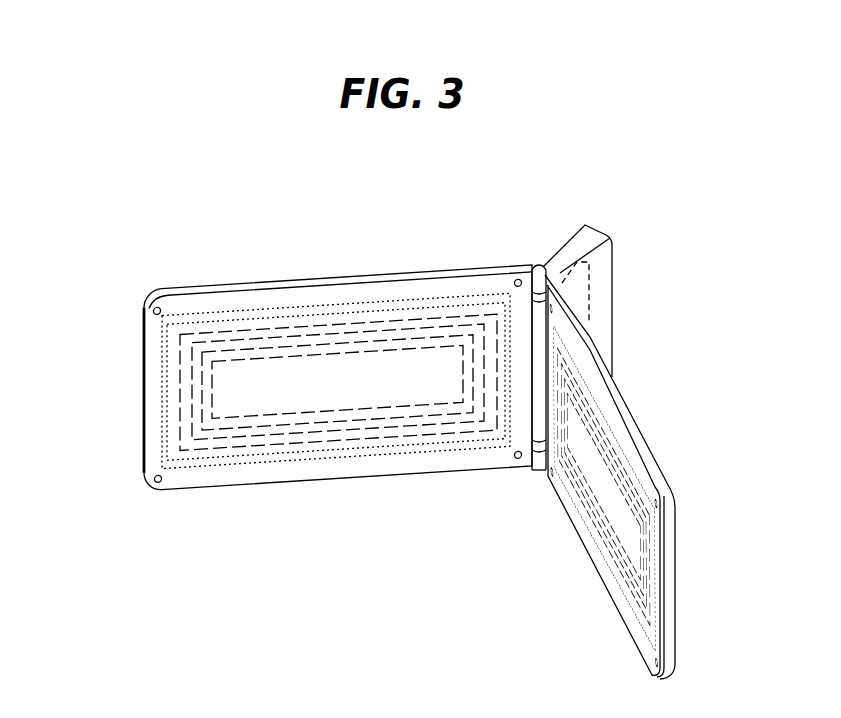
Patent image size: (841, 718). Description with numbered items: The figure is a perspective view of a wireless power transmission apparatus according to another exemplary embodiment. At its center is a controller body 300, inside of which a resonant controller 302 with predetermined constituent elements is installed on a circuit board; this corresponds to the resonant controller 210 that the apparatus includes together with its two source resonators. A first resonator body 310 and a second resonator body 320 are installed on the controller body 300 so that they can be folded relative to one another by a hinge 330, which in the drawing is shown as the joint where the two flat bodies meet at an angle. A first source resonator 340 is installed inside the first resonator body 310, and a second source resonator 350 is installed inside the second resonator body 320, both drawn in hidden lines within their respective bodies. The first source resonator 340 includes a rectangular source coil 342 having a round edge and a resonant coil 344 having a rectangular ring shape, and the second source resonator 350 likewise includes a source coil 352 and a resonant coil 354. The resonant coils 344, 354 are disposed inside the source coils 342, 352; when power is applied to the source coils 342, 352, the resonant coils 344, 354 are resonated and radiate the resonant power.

The controller body 300 is at (565, 238).
The resonant controller 302 is at (594, 316).
The first resonator body 310 is at (144, 480).
The second resonator body 320 is at (598, 567).
The hinge 330 is at (538, 265).
The resonant controller 210 is at (336, 380).
The first source resonator 340 is at (338, 382).
The source coil 342 is at (338, 382).
The resonant coil 344 is at (337, 382).
The second source resonator 350 is at (603, 486).
The source coil 352 is at (645, 552).
The resonant coil 354 is at (603, 486).